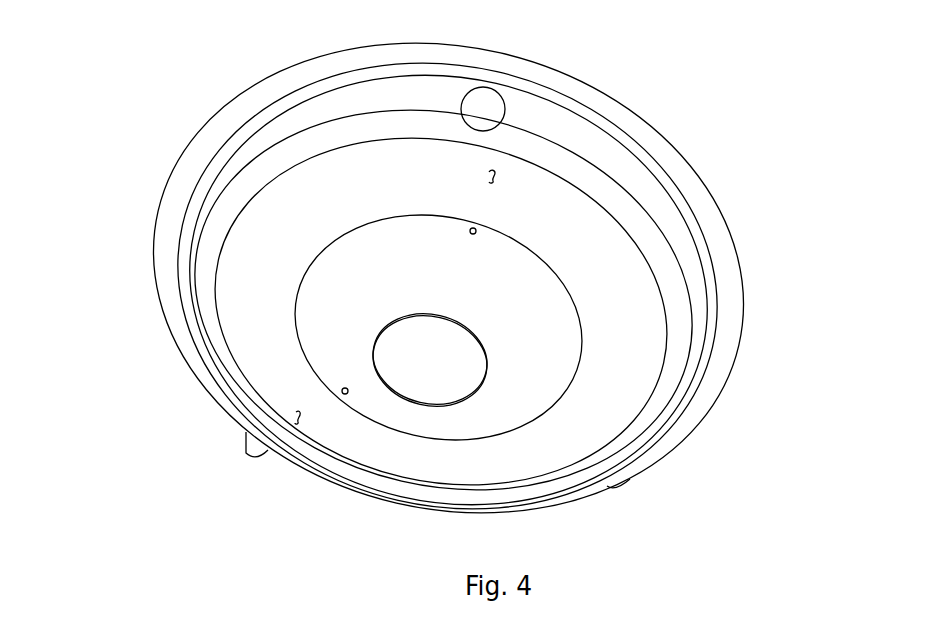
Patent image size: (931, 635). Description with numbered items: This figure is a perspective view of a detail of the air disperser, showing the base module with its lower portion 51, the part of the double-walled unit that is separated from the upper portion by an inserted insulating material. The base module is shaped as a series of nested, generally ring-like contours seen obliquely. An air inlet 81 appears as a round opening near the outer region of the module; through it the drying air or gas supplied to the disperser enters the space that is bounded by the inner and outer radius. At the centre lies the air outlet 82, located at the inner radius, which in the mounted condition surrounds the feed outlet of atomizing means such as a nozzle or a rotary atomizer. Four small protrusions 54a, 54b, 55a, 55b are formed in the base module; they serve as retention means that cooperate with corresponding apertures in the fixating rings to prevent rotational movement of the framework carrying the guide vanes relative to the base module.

The lower portion 51 is at (195, 273).
The air inlet 81 is at (482, 107).
The air outlet 82 is at (480, 355).
The protrusion 54a is at (496, 178).
The protrusion 54b is at (295, 416).
The protrusion 55a is at (476, 232).
The protrusion 55b is at (341, 391).